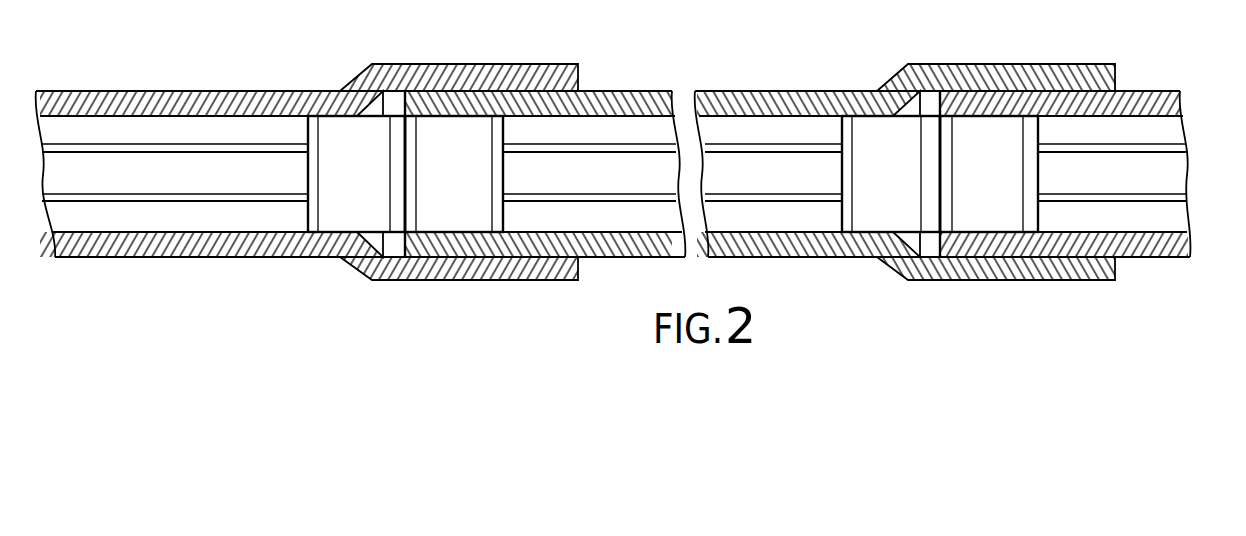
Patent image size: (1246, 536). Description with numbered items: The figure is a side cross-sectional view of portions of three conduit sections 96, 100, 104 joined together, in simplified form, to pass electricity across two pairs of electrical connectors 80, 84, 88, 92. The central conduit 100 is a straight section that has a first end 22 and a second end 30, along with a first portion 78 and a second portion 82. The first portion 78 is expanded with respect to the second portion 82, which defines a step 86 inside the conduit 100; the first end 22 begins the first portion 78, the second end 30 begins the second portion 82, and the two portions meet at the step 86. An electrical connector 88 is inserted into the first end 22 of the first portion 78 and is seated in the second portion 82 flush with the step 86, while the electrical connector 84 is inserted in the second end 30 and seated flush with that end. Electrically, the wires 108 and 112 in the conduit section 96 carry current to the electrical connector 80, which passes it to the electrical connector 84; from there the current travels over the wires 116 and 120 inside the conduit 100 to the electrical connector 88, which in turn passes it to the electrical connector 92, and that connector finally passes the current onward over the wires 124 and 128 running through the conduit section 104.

The conduit 100 is at (800, 61).
The conduit section 96 is at (208, 91).
The first end 22 is at (1108, 80).
The conduit section 104 is at (977, 102).
The electrical wire 112 is at (160, 155).
The electrical wire 108 is at (268, 192).
The electrical wire 120 is at (755, 152).
The electrical wire 116 is at (778, 190).
The electrical wire 128 is at (1128, 153).
The electrical wire 124 is at (1150, 192).
The electrical connector 80 is at (366, 188).
The electrical connector 84 is at (470, 188).
The electrical connector 88 is at (910, 188).
The electrical connector 92 is at (1003, 188).
The second end 30 is at (410, 237).
The step 86 is at (912, 248).
The second portion 82 is at (472, 240).
The first portion 78 is at (1038, 265).